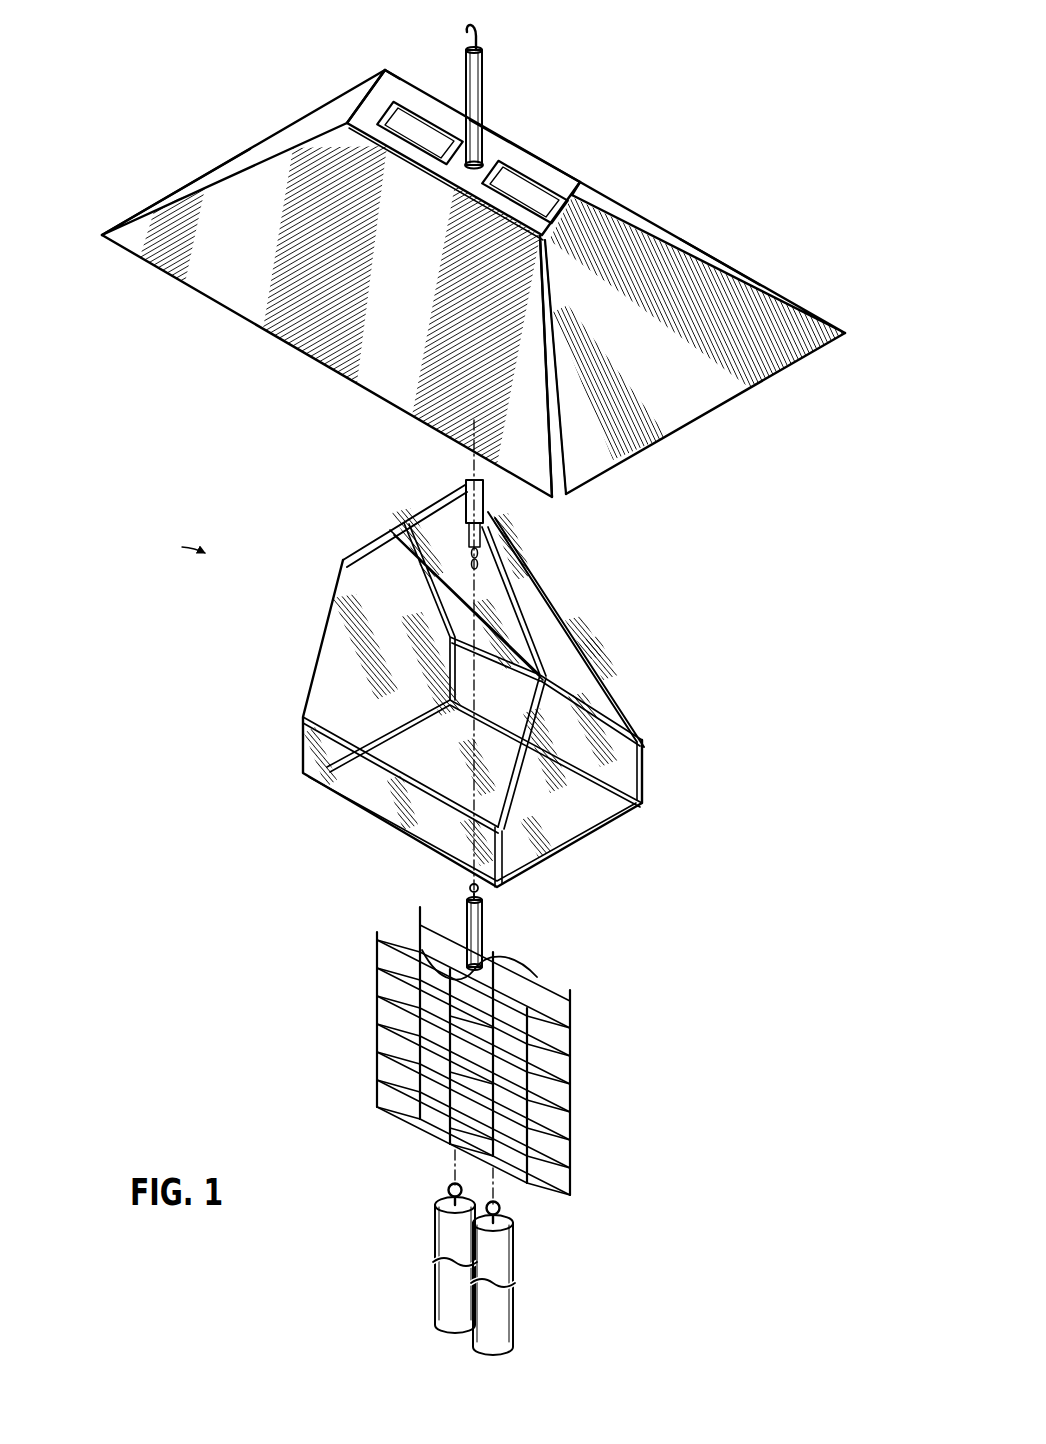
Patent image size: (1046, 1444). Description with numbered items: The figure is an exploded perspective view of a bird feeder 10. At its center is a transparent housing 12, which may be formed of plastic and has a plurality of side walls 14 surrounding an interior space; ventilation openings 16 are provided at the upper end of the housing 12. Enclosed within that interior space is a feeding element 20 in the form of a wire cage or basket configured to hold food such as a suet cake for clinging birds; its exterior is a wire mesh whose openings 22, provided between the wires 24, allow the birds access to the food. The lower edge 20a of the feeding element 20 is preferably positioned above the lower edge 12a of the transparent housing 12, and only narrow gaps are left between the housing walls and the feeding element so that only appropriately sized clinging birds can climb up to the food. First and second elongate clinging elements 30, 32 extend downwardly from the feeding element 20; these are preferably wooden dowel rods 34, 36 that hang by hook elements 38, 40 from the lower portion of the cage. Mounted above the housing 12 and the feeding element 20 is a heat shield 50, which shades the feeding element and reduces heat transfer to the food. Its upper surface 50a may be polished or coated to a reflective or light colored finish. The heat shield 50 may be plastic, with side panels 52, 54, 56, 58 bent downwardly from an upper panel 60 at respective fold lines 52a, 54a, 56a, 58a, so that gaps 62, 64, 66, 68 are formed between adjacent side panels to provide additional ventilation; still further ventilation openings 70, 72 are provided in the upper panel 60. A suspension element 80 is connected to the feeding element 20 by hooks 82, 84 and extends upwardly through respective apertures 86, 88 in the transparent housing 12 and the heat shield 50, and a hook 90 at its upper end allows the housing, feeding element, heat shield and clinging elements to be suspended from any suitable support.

The bird feeder 10 is at (471, 682).
The transparent housing 12 is at (663, 702).
The lower edge of the transparent housing 12a is at (603, 826).
The side walls 14 is at (393, 595).
The ventilation openings 16 is at (450, 503).
The feeding element 20 is at (600, 1068).
The lower edge of the feeding element 20a is at (570, 1170).
The openings 22 is at (390, 1040).
The wires 24 is at (556, 975).
The first elongate clinging element 30 is at (417, 1258).
The second elongate clinging element 32 is at (537, 1279).
The wooden dowel rod 34 is at (445, 1243).
The wooden dowel rod 36 is at (500, 1255).
The hook element 38 is at (448, 1192).
The hook element 40 is at (500, 1208).
The heat shield 50 is at (806, 258).
The upper surface 50a is at (446, 288).
The side panel 52 is at (250, 268).
The fold line 52a is at (460, 190).
The side panel 54 is at (227, 167).
The fold line 54a is at (393, 93).
The side panel 56 is at (582, 176).
The fold line 56a is at (531, 150).
The side panel 58 is at (700, 407).
The fold line 58a is at (562, 228).
The upper panel 60 is at (584, 198).
The gap 62 is at (157, 210).
The gap 64 is at (389, 70).
The gap 66 is at (711, 256).
The gap 68 is at (548, 345).
The ventilation opening 70 is at (421, 133).
The ventilation opening 72 is at (527, 190).
The suspension element 80 is at (477, 489).
The hook 82 is at (422, 955).
The hook 84 is at (500, 950).
The aperture 86 is at (515, 497).
The aperture 88 is at (488, 162).
The hook 90 is at (487, 40).